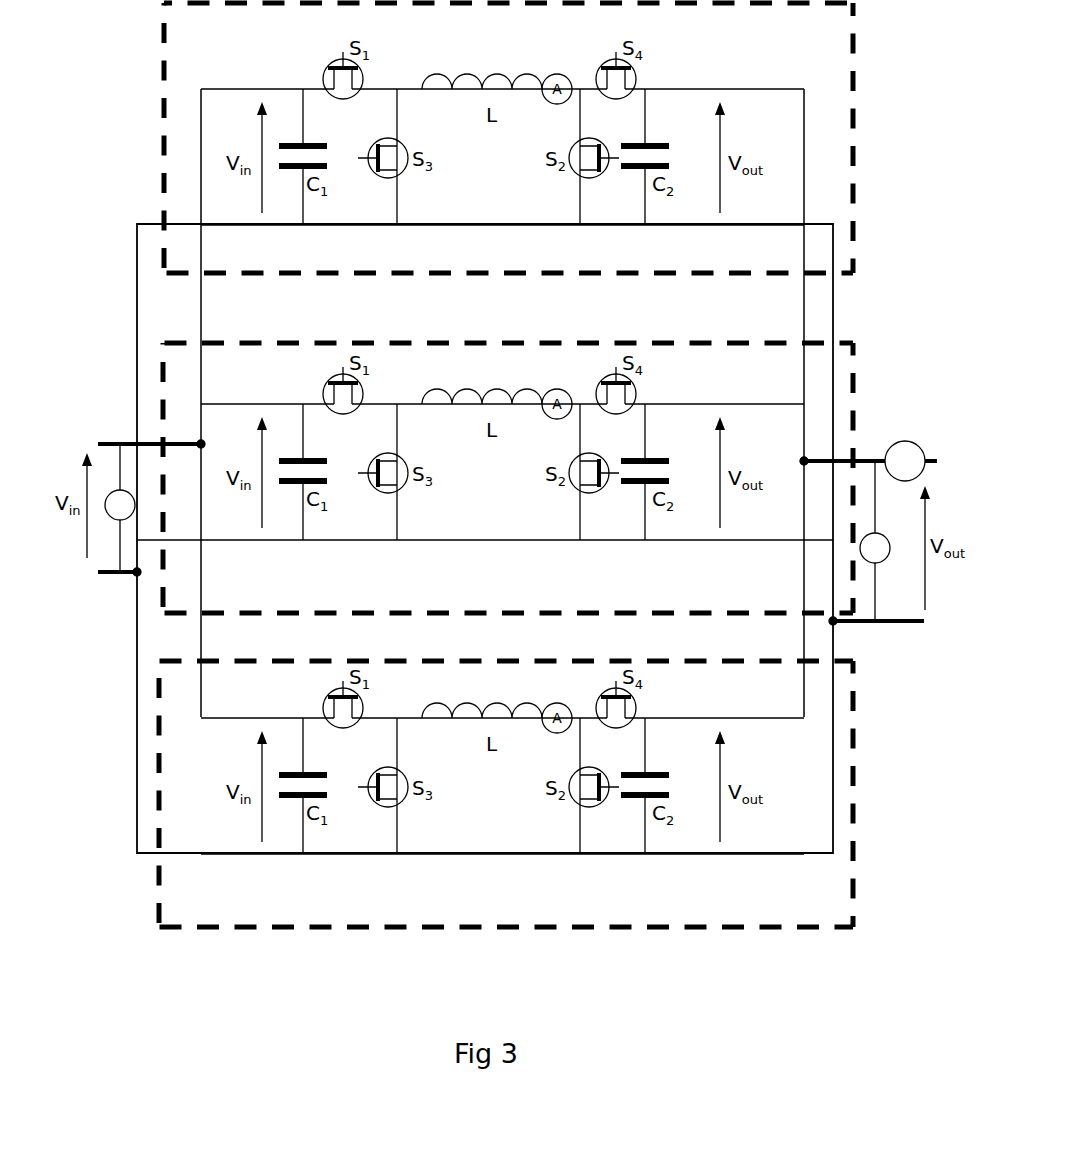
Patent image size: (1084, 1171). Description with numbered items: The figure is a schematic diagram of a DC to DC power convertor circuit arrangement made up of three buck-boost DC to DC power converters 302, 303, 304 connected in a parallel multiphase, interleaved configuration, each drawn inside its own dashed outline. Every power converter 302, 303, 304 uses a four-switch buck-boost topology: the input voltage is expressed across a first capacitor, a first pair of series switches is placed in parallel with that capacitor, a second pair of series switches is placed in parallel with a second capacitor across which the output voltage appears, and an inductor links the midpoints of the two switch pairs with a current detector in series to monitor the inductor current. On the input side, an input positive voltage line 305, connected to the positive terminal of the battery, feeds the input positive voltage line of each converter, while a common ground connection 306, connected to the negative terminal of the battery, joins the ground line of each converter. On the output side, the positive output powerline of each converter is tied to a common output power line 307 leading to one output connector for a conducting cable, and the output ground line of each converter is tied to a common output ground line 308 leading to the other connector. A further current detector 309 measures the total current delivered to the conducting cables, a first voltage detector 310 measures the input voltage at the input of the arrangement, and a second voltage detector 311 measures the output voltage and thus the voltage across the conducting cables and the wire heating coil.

The DC to DC power converter 302 is at (508, 138).
The DC to DC power converter 303 is at (508, 478).
The DC to DC power converter 304 is at (506, 794).
The input positive voltage line 305 is at (124, 440).
The common ground connection 306 is at (120, 578).
The common output power line 307 is at (871, 459).
The common output ground line 308 is at (908, 623).
The further current detector 309 is at (906, 441).
The first voltage detector 310 is at (108, 492).
The second voltage detector 311 is at (879, 598).